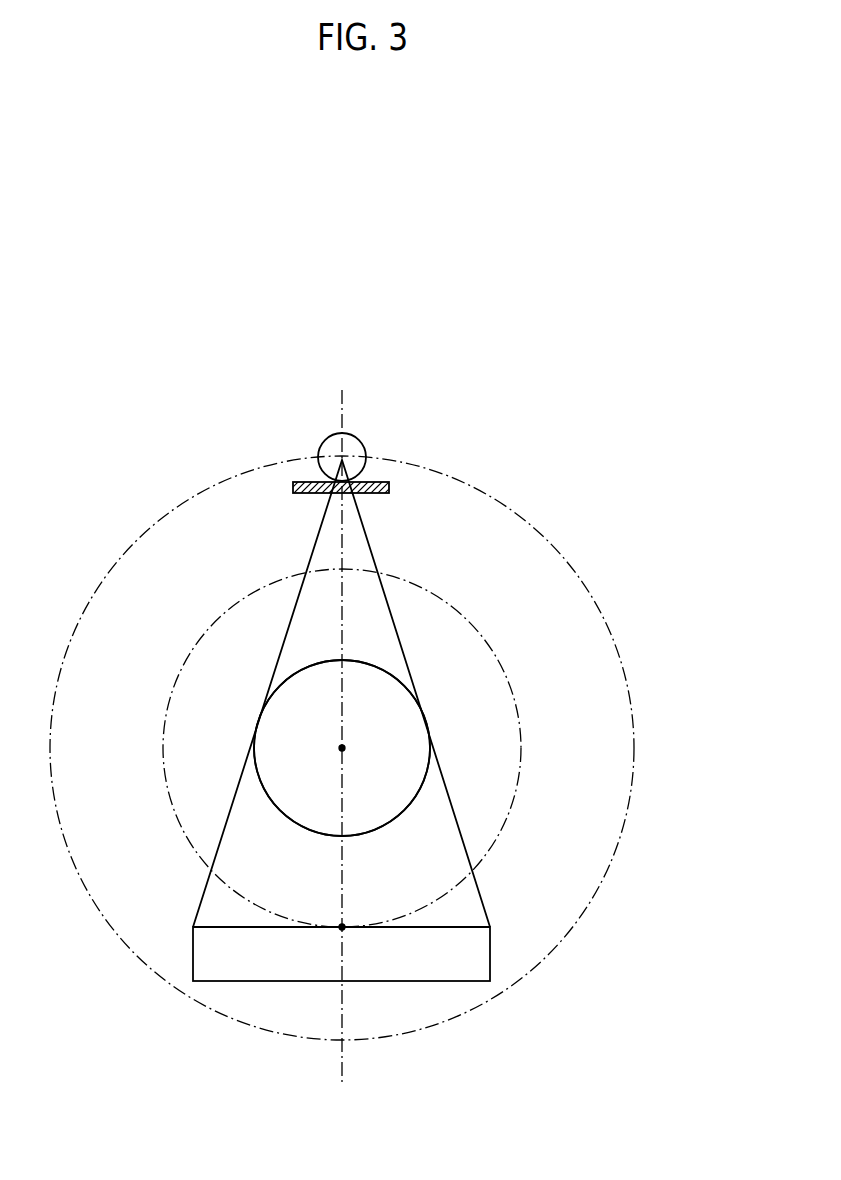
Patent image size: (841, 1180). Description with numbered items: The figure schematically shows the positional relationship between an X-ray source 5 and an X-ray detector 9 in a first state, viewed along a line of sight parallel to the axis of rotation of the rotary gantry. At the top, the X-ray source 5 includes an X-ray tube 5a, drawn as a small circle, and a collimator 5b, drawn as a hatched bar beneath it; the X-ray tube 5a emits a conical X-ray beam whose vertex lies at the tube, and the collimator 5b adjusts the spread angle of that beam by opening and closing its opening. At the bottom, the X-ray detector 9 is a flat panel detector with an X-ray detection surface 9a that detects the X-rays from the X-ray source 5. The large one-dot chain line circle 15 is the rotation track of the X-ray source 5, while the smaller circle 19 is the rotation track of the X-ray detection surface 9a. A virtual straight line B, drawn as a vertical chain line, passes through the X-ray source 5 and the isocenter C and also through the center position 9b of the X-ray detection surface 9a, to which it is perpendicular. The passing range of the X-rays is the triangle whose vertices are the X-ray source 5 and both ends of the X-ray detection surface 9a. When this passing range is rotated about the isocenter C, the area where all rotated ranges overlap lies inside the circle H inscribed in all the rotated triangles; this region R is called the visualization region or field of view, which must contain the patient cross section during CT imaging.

The X-ray source 5 is at (238, 351).
The X-ray tube 5a is at (332, 434).
The collimator 5b is at (300, 481).
The circle 15 is at (507, 508).
The virtual straight line B is at (342, 610).
The region R is at (388, 672).
The isocenter C is at (345, 748).
The circle H is at (420, 787).
The circle 19 is at (500, 831).
The X-ray detector 9 is at (408, 962).
The X-ray detection surface 9a is at (270, 927).
The center position 9b is at (344, 924).